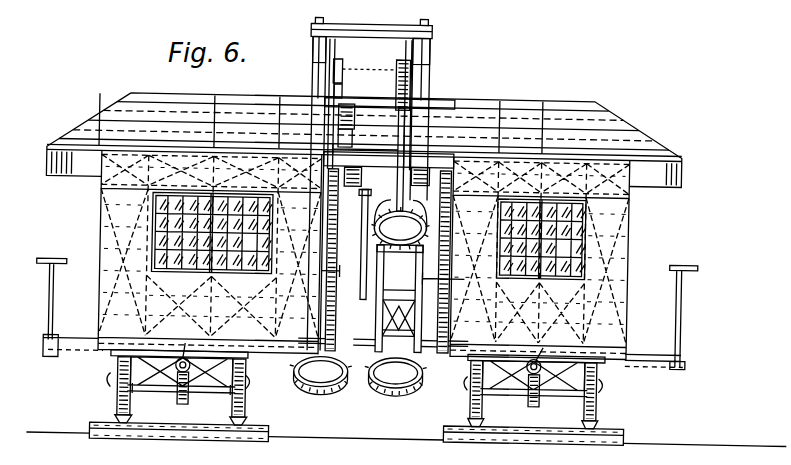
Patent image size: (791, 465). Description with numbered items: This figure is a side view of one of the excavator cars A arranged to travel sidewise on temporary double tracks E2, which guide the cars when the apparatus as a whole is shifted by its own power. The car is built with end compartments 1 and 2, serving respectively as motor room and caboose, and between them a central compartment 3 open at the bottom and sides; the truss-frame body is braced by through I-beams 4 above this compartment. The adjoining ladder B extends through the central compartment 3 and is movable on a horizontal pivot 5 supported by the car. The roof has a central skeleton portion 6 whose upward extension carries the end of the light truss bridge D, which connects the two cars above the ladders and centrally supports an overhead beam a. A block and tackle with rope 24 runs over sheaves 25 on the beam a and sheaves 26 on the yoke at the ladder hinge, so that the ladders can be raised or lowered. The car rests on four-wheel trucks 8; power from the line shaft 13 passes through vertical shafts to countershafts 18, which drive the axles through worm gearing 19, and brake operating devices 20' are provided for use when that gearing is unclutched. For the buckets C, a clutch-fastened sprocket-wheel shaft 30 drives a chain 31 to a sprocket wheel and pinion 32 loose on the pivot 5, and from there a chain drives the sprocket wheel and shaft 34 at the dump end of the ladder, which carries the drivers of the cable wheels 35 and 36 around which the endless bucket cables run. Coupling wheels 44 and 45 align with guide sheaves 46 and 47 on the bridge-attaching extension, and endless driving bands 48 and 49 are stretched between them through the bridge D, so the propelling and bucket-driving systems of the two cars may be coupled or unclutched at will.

The overhead beam a is at (371, 24).
The car A is at (363, 127).
The end compartment 1 is at (213, 232).
The end compartment 2 is at (542, 239).
The brake operating devices 20' is at (367, 314).
The four-wheel truck 8 is at (356, 398).
The worm gearing 19 is at (179, 392).
The countershaft 18 is at (366, 347).
The rope 24 is at (368, 193).
The sheave 25 is at (311, 43).
The central opening or skeleton portion 6 is at (390, 97).
The line shaft 13 is at (389, 139).
The guide sheave 46 is at (349, 55).
The endless wire rope or driving band 48 is at (349, 87).
The guide sheave 47 is at (398, 85).
The light truss bridge D is at (370, 68).
The cable wheel 36 is at (349, 145).
The coupling wheel 44 is at (347, 139).
The endless wire rope or driving band 49 is at (393, 159).
The through I-beam 4 is at (365, 152).
The horizontal sprocket-wheel shaft 30 is at (365, 189).
The sheave 26 is at (427, 170).
The chain 31 is at (328, 199).
The horizontal pivot 5 is at (450, 262).
The coupling wheel 45 is at (400, 208).
The central compartment 3 is at (400, 226).
The bucket C is at (358, 308).
The cable wheel 35 is at (399, 299).
The sprocket wheel and shaft 34 is at (398, 318).
The sprocket wheel and pinion 32 is at (321, 270).
The ladder B is at (387, 308).
The double tracks E2 is at (373, 420).